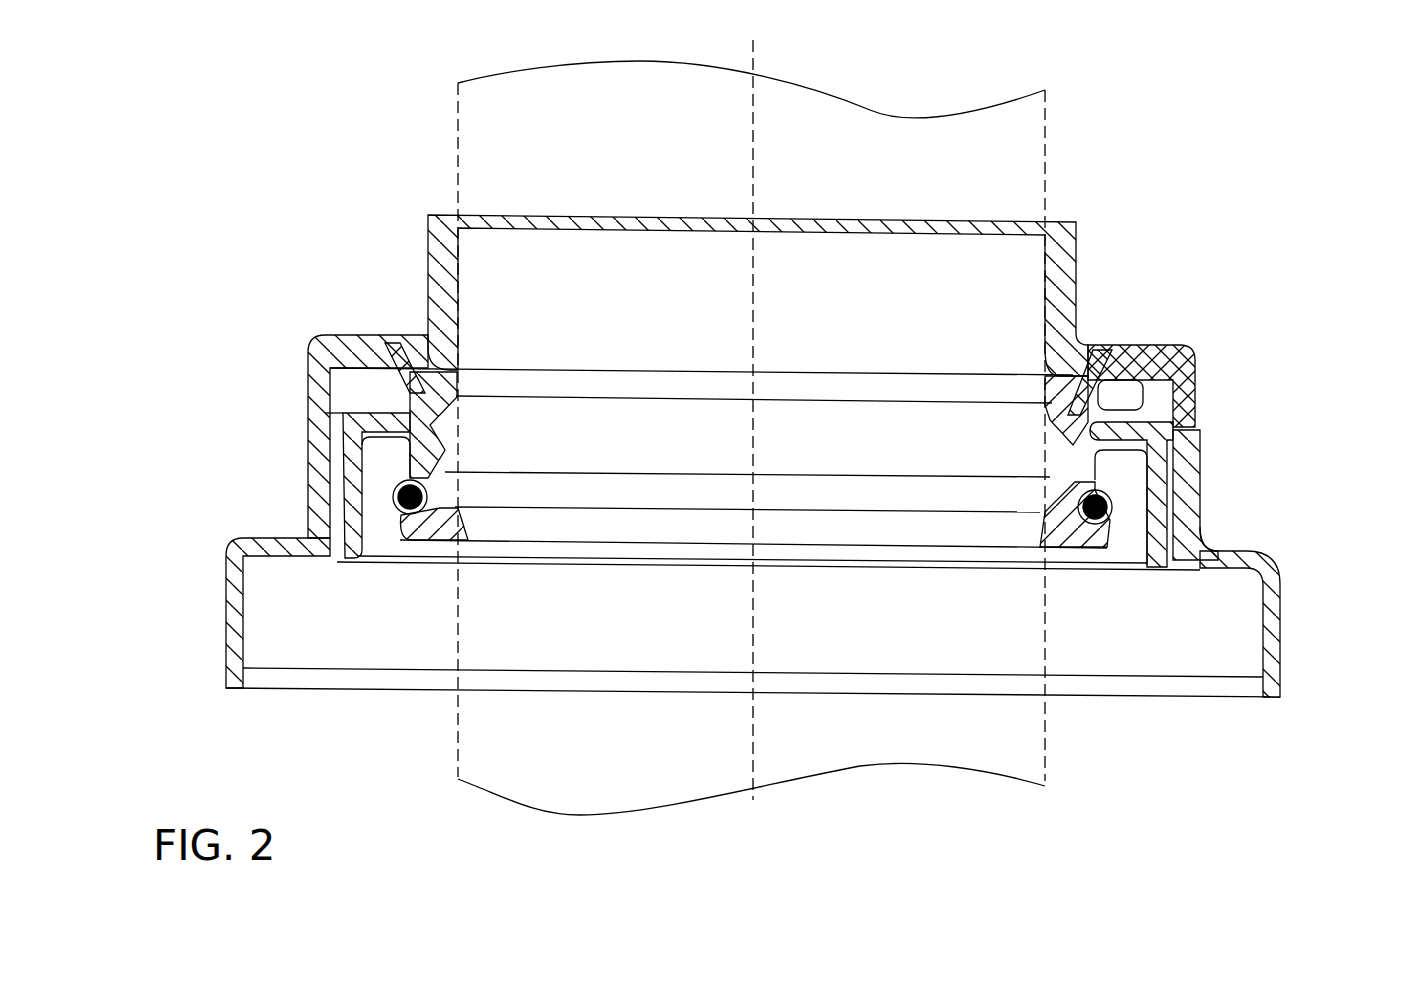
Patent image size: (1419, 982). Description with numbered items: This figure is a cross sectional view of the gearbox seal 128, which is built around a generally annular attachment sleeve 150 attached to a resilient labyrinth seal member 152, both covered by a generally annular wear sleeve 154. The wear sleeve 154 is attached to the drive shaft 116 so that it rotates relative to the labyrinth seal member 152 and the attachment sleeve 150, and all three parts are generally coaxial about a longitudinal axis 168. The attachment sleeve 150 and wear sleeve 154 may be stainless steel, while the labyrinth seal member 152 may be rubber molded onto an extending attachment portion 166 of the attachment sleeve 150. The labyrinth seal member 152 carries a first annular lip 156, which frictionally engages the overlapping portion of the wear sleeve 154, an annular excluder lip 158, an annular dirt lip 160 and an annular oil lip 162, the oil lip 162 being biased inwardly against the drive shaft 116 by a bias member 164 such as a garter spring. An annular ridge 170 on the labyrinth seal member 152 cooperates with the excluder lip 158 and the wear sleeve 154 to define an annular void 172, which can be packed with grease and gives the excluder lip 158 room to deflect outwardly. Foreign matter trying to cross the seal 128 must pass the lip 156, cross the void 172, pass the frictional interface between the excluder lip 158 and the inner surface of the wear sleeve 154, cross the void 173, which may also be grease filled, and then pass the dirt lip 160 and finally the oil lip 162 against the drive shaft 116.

The drive shaft 116 is at (1047, 105).
The seal 128 is at (1105, 178).
The annular attachment sleeve 150 is at (1282, 632).
The labyrinth seal member 152 is at (1205, 525).
The wear sleeve 154 is at (1080, 272).
The first annular lip 156 is at (1178, 398).
The annular excluder lip 158 is at (1078, 398).
The annular dirt lip 160 is at (440, 422).
The annular oil lip 162 is at (418, 460).
The bias member 164 is at (392, 492).
The extending attachment portion 166 is at (328, 415).
The longitudinal axis 168 is at (755, 203).
The annular ridge 170 is at (1182, 347).
The annular void 172 is at (1118, 397).
The void 173 is at (440, 382).